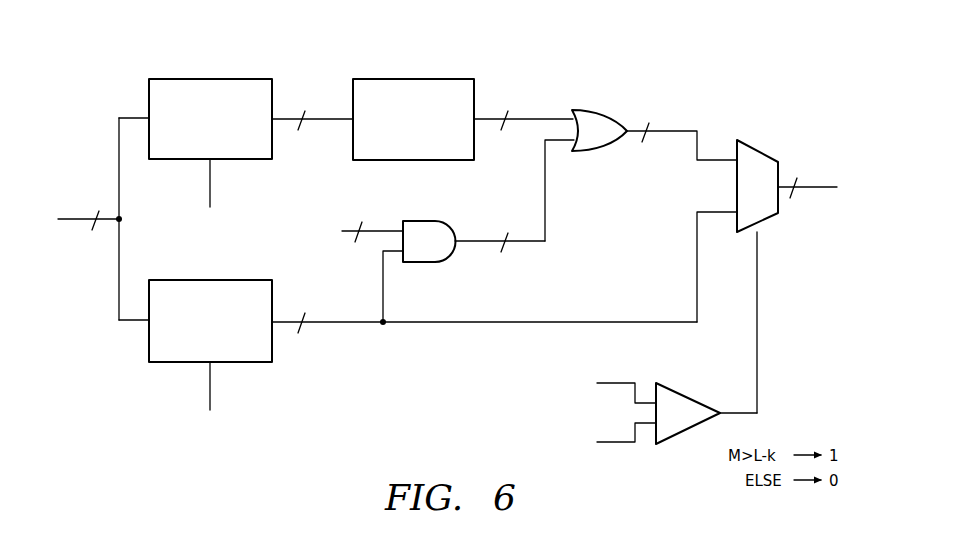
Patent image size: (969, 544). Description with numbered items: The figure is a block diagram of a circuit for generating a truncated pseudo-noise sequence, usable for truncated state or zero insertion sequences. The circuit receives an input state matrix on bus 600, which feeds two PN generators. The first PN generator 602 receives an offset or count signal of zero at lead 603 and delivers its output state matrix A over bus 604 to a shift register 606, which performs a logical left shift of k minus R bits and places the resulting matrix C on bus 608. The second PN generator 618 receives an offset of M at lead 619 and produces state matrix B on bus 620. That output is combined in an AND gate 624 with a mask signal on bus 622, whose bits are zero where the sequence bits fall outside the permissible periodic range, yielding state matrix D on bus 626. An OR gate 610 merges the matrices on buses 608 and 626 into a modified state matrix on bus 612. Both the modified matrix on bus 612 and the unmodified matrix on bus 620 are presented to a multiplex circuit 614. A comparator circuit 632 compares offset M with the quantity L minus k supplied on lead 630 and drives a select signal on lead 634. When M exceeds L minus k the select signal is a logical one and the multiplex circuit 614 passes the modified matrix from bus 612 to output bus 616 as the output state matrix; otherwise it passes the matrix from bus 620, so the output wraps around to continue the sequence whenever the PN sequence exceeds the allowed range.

The bus 600 is at (79, 217).
The PN generator 602 is at (210, 79).
The lead 603 is at (210, 173).
The bus 604 is at (333, 119).
The shift register 606 is at (413, 79).
The bus 608 is at (535, 119).
The OR gate 610 is at (605, 110).
The bus 612 is at (665, 131).
The multiplex circuit 614 is at (758, 150).
The bus 616 is at (818, 187).
The PN generator 618 is at (149, 342).
The lead 619 is at (210, 375).
The bus 620 is at (413, 323).
The bus 622 is at (382, 230).
The AND gate 624 is at (428, 263).
The bus 626 is at (545, 210).
The lead 630 is at (615, 442).
The comparator circuit 632 is at (688, 395).
The lead 634 is at (757, 282).